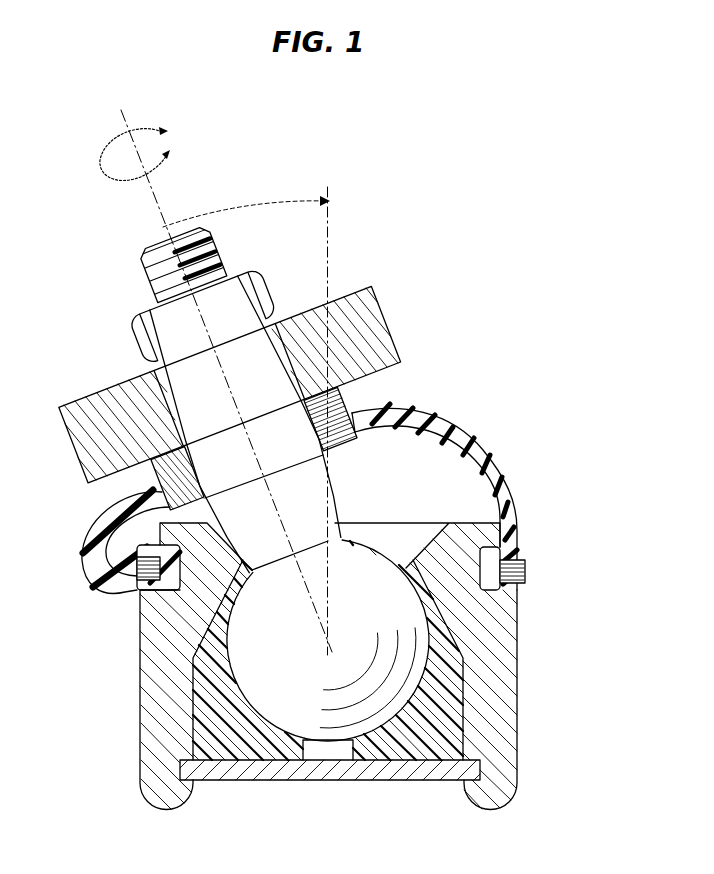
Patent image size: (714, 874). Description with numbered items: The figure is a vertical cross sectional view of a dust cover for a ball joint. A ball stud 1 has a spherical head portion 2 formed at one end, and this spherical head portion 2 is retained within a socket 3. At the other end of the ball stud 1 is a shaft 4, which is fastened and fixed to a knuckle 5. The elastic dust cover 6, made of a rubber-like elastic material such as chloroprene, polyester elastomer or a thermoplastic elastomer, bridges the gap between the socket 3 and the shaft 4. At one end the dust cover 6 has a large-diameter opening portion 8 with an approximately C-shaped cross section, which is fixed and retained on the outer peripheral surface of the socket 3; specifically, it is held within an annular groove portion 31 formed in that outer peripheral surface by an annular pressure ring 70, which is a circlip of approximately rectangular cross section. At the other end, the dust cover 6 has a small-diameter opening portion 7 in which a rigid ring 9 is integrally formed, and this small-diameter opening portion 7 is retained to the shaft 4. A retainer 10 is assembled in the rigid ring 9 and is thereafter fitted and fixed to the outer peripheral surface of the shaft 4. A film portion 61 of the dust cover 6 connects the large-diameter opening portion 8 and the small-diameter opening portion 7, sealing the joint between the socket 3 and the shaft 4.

The ball stud 1 is at (393, 360).
The spherical head portion 2 is at (440, 626).
The socket 3 is at (493, 693).
The shaft 4 is at (282, 320).
The knuckle 5 is at (374, 283).
The dust cover 6 is at (505, 436).
The film portion 61 is at (506, 468).
The small-diameter opening portion 7 is at (358, 412).
The large-diameter opening portion 8 is at (518, 583).
The rigid ring 9 is at (352, 395).
The retainer 10 is at (160, 478).
The annular groove portion 31 is at (520, 548).
The pressure ring 70 is at (135, 592).